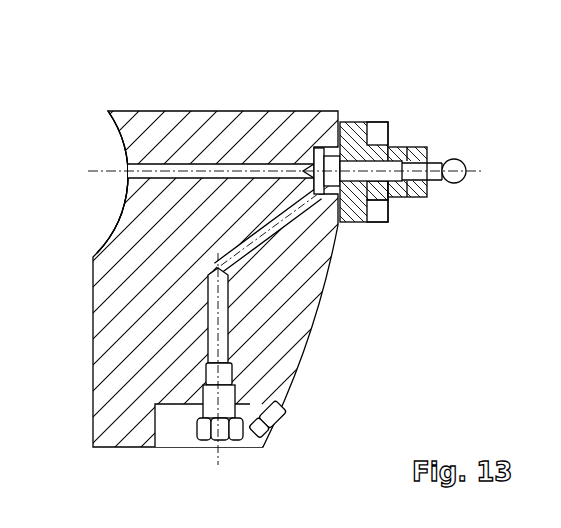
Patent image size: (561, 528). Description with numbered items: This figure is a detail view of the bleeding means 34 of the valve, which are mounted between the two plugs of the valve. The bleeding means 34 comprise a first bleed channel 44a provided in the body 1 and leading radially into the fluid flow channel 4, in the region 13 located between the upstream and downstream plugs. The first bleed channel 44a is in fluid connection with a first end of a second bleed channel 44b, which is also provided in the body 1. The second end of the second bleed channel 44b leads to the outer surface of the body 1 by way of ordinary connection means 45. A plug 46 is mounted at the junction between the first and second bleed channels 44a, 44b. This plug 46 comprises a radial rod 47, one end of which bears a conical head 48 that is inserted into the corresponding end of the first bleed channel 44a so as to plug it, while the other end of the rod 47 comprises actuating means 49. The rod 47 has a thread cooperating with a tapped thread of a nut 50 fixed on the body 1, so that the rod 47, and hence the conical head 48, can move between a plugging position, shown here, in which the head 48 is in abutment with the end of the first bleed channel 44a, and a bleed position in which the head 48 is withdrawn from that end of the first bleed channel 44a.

The body 1 is at (300, 297).
The fluid flow channel 4 is at (99, 144).
The region 13 is at (113, 198).
The bleeding means 34 is at (401, 99).
The first bleed channel 44a is at (207, 162).
The second bleed channel 44b is at (263, 242).
The connection means 45 is at (233, 387).
The plug 46 is at (418, 132).
The radial rod 47 is at (388, 197).
The conical head 48 is at (310, 155).
The actuating means 49 is at (452, 159).
The nut 50 is at (377, 140).